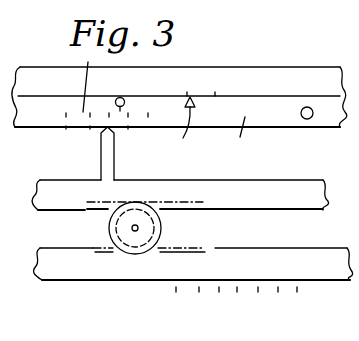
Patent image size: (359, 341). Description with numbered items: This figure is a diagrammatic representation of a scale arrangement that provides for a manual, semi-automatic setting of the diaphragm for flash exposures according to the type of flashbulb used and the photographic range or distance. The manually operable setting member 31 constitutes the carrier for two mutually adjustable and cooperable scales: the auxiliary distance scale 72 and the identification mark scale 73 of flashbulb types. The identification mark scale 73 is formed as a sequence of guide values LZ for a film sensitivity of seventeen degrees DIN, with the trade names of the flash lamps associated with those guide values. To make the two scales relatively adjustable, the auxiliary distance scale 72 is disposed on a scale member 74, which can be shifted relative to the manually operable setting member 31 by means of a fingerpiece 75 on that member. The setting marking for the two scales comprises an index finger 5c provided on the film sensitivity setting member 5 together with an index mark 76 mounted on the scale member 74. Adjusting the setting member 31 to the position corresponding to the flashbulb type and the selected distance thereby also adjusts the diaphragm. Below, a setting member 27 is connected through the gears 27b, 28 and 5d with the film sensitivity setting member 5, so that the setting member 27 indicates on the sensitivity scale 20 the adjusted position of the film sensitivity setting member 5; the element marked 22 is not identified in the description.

The manually operable setting member 31 is at (39, 68).
The auxiliary distance scale 72 is at (76, 80).
The identification mark scale 73 is at (203, 70).
The index mark 76 is at (181, 129).
The scale member 74 is at (238, 139).
The fingerpiece 75 is at (305, 119).
The film sensitivity setting member 5 is at (62, 183).
The index finger 5c is at (102, 146).
The gear 5d is at (104, 206).
The gear 28 is at (162, 224).
The gear 27b is at (160, 247).
The setting member 27 is at (88, 270).
The scale carrier 22 is at (236, 280).
The sensitivity scale 20 is at (268, 302).